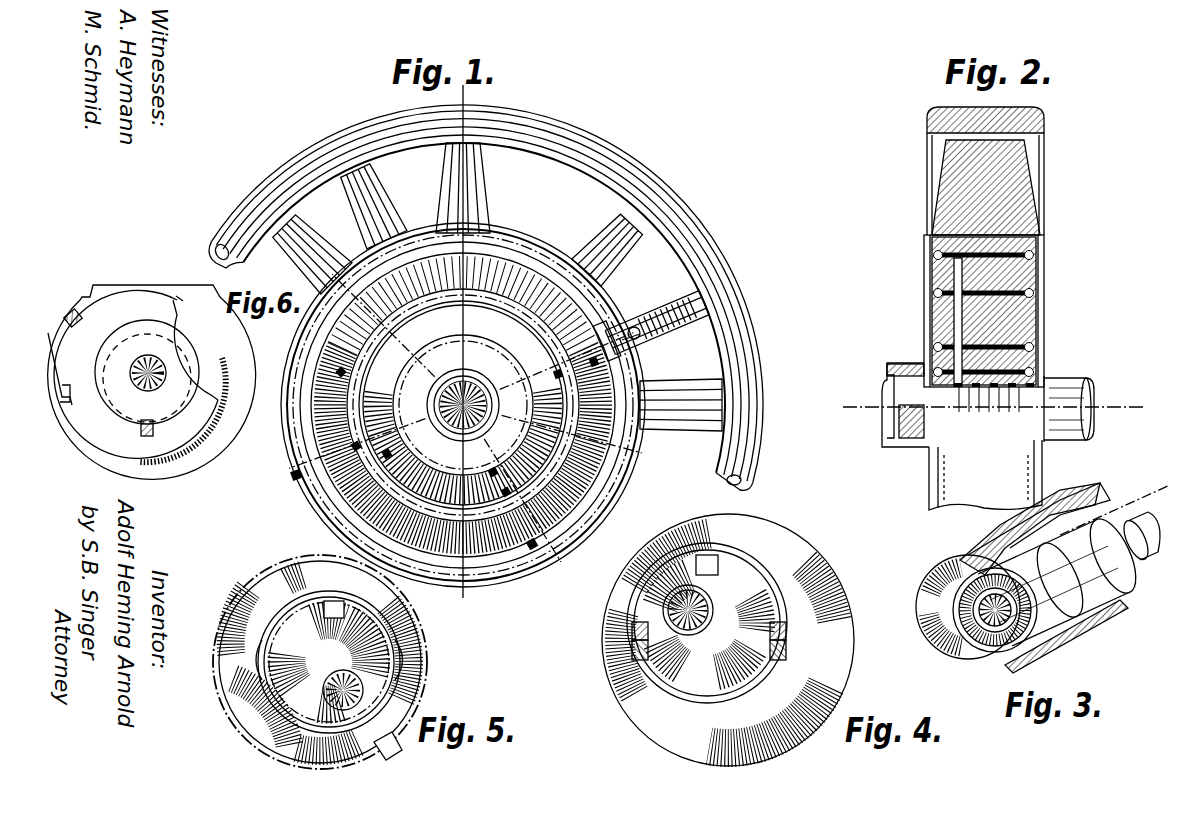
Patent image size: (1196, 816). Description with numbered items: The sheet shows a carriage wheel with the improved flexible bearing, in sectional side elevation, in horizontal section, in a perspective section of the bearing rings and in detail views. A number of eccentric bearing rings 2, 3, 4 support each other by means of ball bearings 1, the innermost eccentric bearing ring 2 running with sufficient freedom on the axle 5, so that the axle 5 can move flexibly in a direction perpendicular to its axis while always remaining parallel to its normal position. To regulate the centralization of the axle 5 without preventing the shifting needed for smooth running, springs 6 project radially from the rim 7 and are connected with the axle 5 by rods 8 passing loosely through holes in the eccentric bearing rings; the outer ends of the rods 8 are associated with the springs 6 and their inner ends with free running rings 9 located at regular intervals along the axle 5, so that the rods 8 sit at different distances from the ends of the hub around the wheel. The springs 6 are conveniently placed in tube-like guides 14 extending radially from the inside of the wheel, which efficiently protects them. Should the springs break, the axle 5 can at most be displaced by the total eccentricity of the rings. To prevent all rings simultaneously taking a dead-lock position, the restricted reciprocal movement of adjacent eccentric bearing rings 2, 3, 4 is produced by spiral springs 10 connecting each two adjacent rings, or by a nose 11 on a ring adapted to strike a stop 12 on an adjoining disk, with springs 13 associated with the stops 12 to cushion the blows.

In FIG. 2, the ball bearings 1 is at (1050, 255).
In FIG. 2, the eccentric bearing ring 2 is at (1052, 357).
In FIG. 3, the eccentric bearing ring 2 is at (995, 642).
In FIG. 4, the eccentric bearing ring 2 is at (683, 670).
In FIG. 6, the eccentric bearing ring 2 is at (137, 406).
In FIG. 2, the eccentric bearing ring 3 is at (1052, 311).
In FIG. 3, the eccentric bearing ring 3 is at (940, 578).
In FIG. 4, the eccentric bearing ring 3 is at (668, 728).
In FIG. 6, the eccentric bearing ring 3 is at (100, 417).
In FIG. 2, the eccentric bearing ring 4 is at (1052, 271).
In FIG. 6, the eccentric bearing ring 4 is at (222, 422).
In FIG. 1, the axle 5 is at (470, 410).
In FIG. 2, the axle 5 is at (1078, 415).
In FIG. 3, the axle 5 is at (1140, 528).
In FIG. 4, the axle 5 is at (688, 610).
In FIG. 5, the axle 5 is at (350, 688).
In FIG. 6, the axle 5 is at (165, 374).
In FIG. 1, the springs 6 is at (695, 303).
In FIG. 1, the rim 7 is at (660, 196).
In FIG. 1, the rods 8 is at (640, 336).
In FIG. 2, the rods 8 is at (945, 322).
In FIG. 2, the free running rings 9 is at (1068, 385).
In FIG. 3, the spiral springs 10 is at (1108, 610).
In FIG. 4, the nose 11 is at (707, 565).
In FIG. 5, the nose 11 is at (345, 612).
In FIG. 6, the nose 11 is at (72, 315).
In FIG. 4, the stop 12 is at (632, 632).
In FIG. 6, the stop 12 is at (66, 395).
In FIG. 4, the springs 13 is at (632, 665).
In FIG. 5, the springs 13 is at (392, 640).
In FIG. 1, the tube-like guides 14 is at (652, 318).